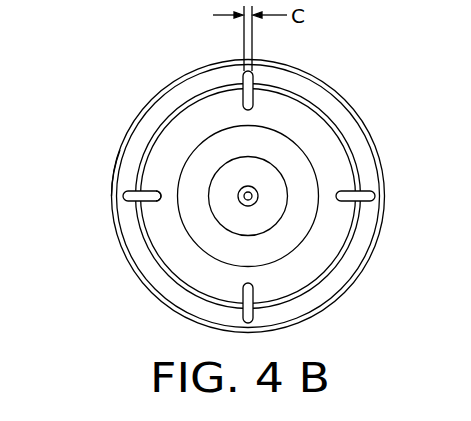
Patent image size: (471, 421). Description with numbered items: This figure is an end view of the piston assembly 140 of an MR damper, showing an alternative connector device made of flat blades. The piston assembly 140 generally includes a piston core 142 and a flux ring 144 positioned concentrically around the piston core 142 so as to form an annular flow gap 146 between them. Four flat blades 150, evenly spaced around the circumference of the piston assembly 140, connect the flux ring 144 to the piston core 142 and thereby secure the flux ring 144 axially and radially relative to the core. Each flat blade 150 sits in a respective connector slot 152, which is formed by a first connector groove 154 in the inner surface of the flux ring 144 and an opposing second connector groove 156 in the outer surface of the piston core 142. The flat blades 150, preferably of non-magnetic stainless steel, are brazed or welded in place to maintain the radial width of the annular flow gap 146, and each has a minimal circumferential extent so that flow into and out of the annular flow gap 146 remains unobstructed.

The piston assembly 140 is at (374, 98).
The piston core 142 is at (176, 243).
The flux ring 144 is at (347, 272).
The annular flow gap 146 is at (352, 232).
The flat blades 150 is at (247, 84).
The connector slot 152 is at (114, 211).
The first connector groove 154 is at (125, 192).
The second connector groove 156 is at (159, 191).